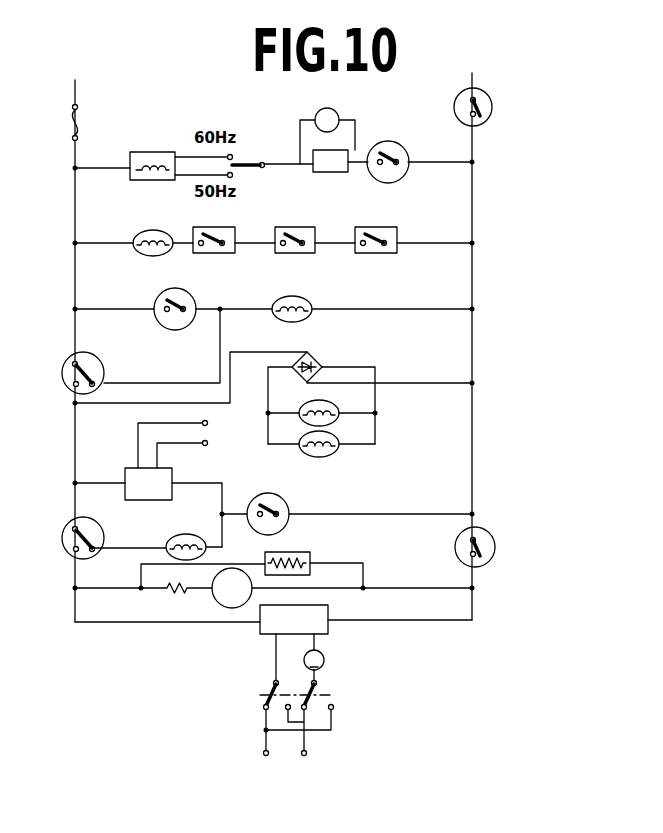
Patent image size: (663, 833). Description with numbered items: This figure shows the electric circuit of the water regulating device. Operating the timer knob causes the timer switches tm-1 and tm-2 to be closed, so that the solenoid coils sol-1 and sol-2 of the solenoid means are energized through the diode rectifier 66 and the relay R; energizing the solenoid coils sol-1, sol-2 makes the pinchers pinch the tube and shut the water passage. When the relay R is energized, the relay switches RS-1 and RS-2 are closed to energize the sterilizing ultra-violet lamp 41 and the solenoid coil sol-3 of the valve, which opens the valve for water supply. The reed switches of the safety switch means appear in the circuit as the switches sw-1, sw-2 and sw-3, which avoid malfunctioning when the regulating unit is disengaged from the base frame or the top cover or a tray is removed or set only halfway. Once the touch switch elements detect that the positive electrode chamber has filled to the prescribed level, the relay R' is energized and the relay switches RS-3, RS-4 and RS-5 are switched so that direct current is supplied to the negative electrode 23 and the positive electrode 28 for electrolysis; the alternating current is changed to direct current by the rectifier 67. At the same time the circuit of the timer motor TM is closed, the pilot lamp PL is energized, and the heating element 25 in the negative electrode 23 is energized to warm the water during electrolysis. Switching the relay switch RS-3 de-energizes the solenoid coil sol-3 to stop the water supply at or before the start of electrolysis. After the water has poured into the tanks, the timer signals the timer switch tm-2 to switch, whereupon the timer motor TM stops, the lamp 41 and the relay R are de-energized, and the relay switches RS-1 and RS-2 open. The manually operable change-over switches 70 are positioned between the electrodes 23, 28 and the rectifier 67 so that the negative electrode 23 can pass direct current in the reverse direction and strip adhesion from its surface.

The sterilizing lamp 41 is at (330, 173).
The diode rectifier 66 is at (331, 355).
The heating element 25 is at (306, 556).
The rectifier 67 is at (327, 619).
The change-over switches 70 is at (326, 692).
The negative electrode 23 is at (263, 753).
The positive electrode 28 is at (307, 753).
The timer switch tm-2 is at (489, 108).
The timer switch tm-1 is at (119, 360).
The relay switch RS-1 is at (288, 512).
The relay switch RS-2 is at (401, 134).
The relay switch RS-3 is at (120, 532).
The relay switch RS-4 is at (489, 540).
The relay switch RS-5 is at (191, 300).
The relay R is at (153, 232).
The relay R' is at (162, 479).
The timer motor TM is at (296, 290).
The safety switch sw-1 is at (219, 224).
The safety switch sw-2 is at (298, 222).
The safety switch sw-3 is at (379, 222).
The solenoid coil sol-1 is at (346, 405).
The solenoid coil sol-2 is at (351, 437).
The solenoid coil sol-3 is at (199, 531).
The pilot lamp PL is at (232, 588).
The ammeter A is at (314, 660).